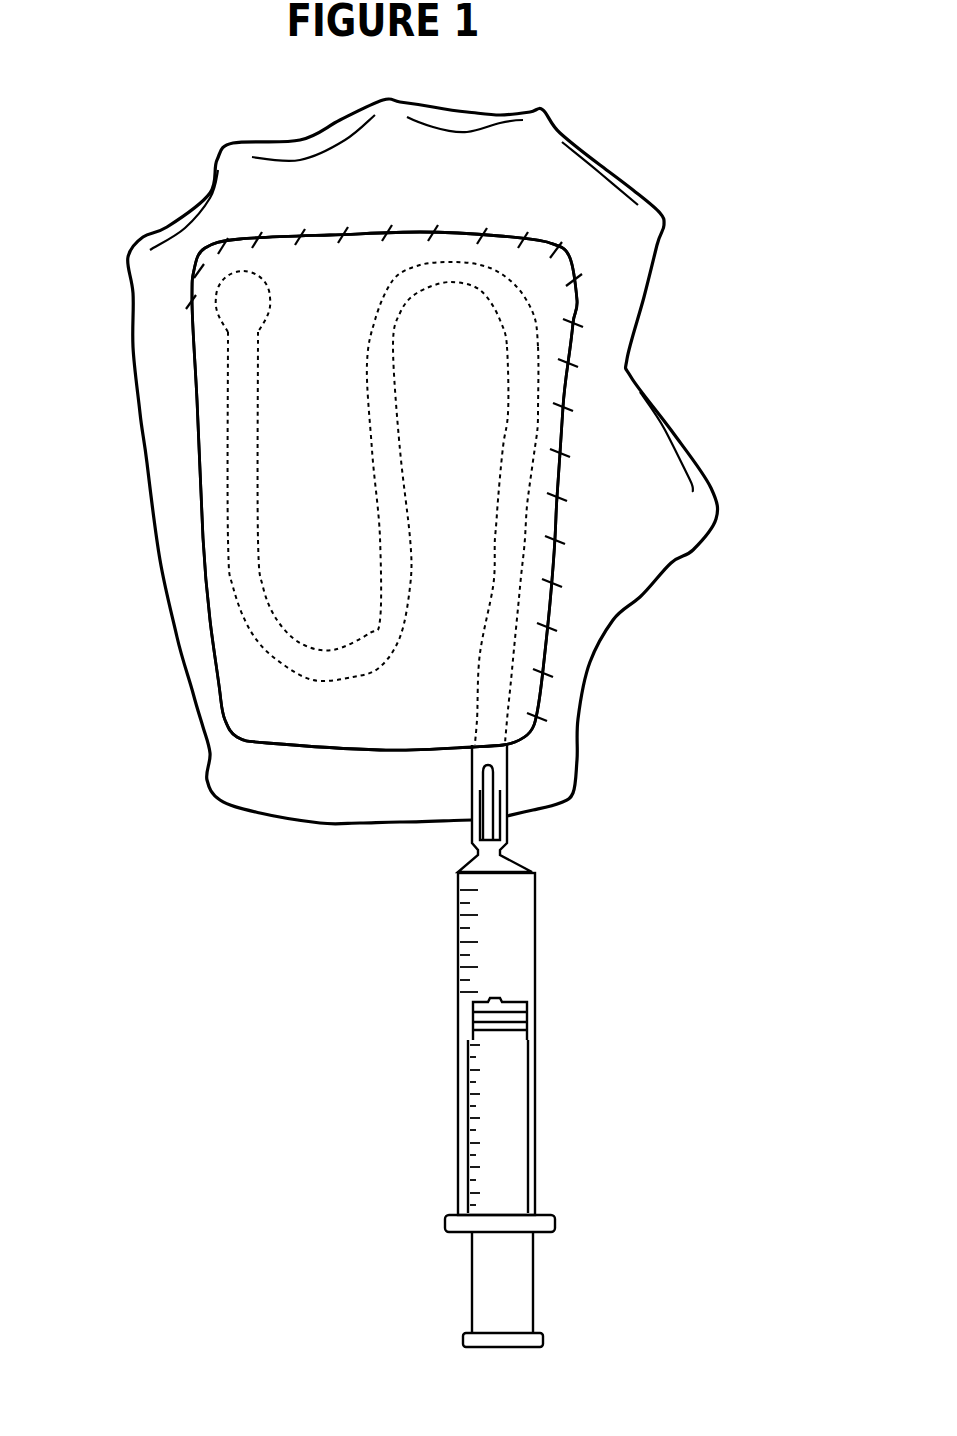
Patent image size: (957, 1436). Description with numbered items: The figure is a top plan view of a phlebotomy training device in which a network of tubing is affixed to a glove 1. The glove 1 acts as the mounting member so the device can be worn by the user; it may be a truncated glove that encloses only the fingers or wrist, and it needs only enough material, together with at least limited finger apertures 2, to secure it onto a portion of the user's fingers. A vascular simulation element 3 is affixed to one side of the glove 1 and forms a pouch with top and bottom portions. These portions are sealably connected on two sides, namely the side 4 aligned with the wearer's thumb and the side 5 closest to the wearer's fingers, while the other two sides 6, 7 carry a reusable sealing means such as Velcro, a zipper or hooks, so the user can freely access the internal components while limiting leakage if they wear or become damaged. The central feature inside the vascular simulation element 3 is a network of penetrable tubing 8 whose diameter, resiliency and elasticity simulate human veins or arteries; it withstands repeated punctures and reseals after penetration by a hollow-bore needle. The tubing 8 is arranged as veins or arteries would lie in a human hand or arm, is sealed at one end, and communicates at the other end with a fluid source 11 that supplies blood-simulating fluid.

The glove 1 is at (277, 788).
The finger apertures 2 is at (472, 108).
The vascular simulation element 3 is at (247, 702).
The thumb side 4 is at (550, 605).
The finger side 5 is at (322, 233).
The reusable sealing side 6 is at (368, 750).
The reusable sealing side 7 is at (203, 542).
The penetrable tubing 8 is at (508, 682).
The fluid source 11 is at (495, 947).